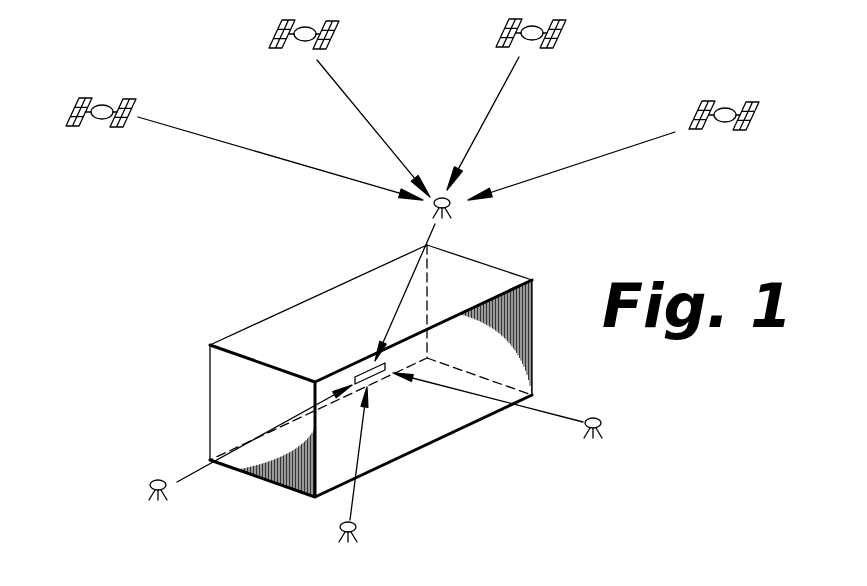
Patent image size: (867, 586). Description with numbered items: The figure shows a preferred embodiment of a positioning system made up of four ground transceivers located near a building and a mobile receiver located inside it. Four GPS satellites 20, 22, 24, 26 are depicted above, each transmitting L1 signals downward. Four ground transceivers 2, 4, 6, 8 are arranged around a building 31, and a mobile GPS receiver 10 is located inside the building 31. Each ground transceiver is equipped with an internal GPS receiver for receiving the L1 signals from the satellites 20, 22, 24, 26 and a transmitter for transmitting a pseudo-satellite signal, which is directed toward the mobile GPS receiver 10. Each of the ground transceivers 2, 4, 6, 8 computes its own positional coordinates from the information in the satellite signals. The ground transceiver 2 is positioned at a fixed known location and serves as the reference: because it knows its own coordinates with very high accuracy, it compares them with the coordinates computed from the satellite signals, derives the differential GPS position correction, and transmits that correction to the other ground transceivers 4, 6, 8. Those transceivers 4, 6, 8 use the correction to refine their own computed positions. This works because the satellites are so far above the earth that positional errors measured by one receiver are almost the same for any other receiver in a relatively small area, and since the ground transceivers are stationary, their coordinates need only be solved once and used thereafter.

The ground transceiver 2 is at (451, 203).
The ground transceiver 4 is at (600, 421).
The ground transceiver 6 is at (355, 523).
The ground transceiver 8 is at (155, 480).
The mobile GPS receiver 10 is at (367, 358).
The GPS satellite 20 is at (702, 101).
The GPS satellite 22 is at (509, 19).
The GPS satellite 24 is at (282, 20).
The GPS satellite 26 is at (79, 98).
The building 31 is at (328, 297).